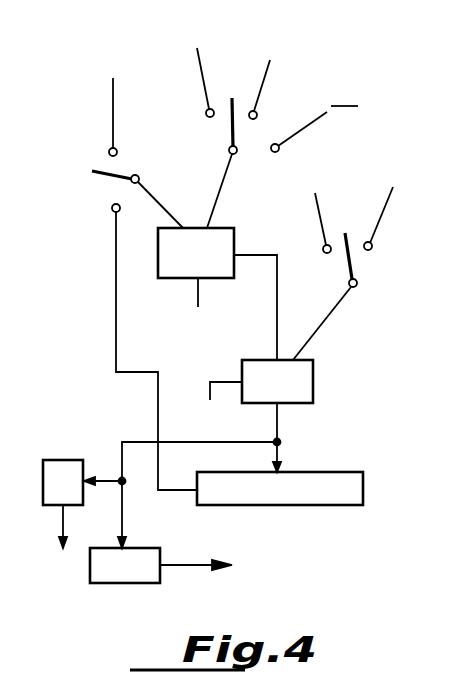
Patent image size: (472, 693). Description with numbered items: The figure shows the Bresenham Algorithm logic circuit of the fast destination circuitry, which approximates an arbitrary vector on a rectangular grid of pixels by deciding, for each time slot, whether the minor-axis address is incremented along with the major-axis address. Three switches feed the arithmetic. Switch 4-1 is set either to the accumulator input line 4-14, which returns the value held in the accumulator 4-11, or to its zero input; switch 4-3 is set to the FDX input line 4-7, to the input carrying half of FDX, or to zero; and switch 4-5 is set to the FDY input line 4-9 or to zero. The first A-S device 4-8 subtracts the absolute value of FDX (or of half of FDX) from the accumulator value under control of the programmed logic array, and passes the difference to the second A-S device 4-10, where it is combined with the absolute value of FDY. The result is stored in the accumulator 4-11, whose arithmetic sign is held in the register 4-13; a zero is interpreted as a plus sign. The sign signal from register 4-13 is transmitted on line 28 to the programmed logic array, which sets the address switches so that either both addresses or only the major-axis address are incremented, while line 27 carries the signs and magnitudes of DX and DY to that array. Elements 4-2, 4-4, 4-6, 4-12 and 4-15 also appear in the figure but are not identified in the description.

The switch 4-1 is at (117, 188).
The zero input terminal 4-2 is at (112, 103).
The switch 4-3 is at (229, 151).
The zero input terminal 4-4 is at (199, 72).
The switch 4-5 is at (360, 255).
The zero input terminal 4-6 is at (385, 200).
The FDX input line 4-7 is at (266, 72).
The A-S device 4-8 is at (184, 280).
The FDY input line 4-9 is at (318, 212).
The A-S device 4-10 is at (308, 378).
The accumulator 4-11 is at (353, 487).
The flip-flop 4-12 is at (63, 462).
The register 4-13 is at (156, 557).
The accumulator input line 4-14 is at (113, 226).
The FDX/2 input terminal 4-15 is at (315, 110).
The line 27 is at (68, 522).
The line 28 is at (197, 568).